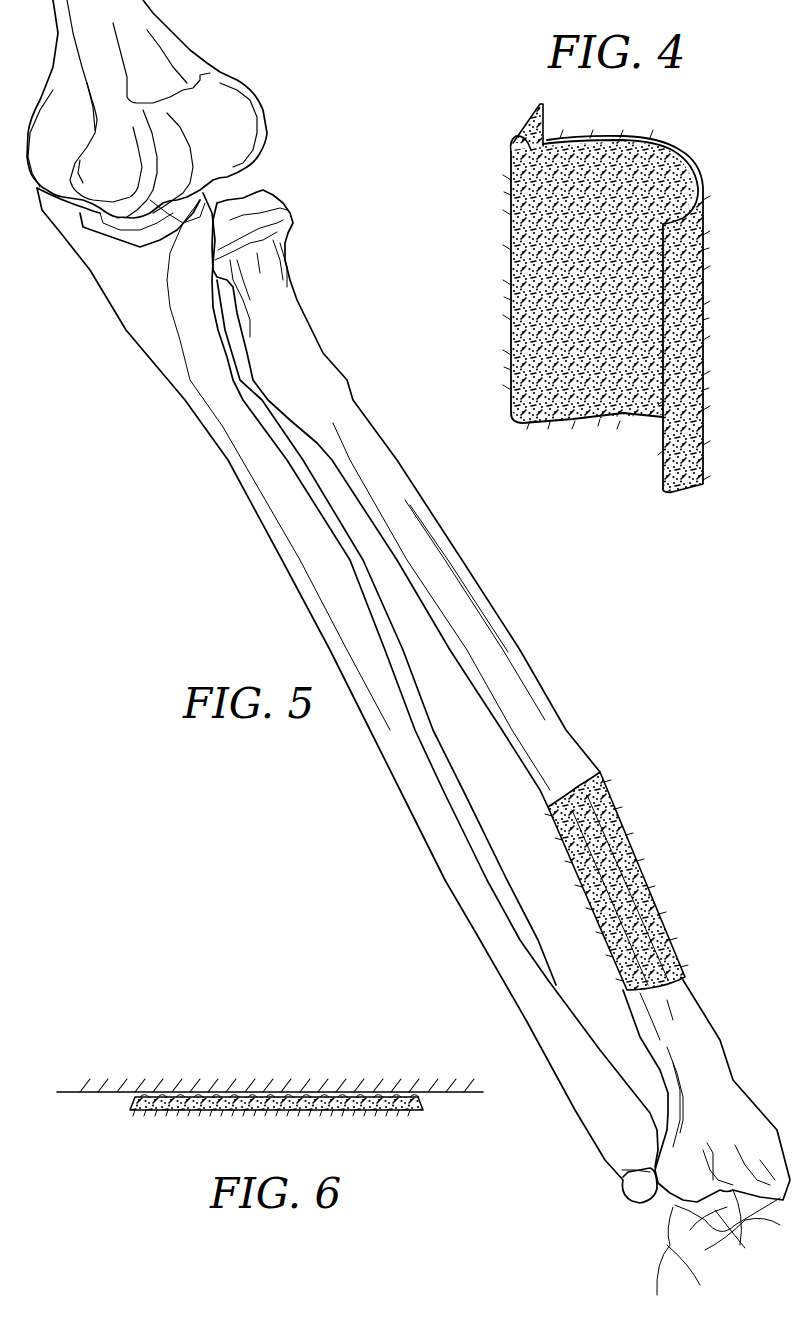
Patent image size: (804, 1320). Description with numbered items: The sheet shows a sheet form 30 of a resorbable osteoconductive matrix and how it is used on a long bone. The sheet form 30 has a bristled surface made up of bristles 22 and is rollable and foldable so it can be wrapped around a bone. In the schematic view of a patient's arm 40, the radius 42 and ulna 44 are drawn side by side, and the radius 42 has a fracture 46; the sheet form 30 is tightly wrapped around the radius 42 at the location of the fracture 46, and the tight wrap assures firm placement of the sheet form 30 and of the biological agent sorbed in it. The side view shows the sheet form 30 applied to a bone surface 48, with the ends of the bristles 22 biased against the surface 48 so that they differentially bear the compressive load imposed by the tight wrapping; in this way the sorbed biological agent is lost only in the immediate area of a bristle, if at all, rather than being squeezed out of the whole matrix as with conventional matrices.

In FIG. 4, the bristles 22 is at (560, 273).
In FIG. 6, the bristles 22 is at (227, 1092).
In FIG. 4, the sheet form 30 is at (693, 139).
In FIG. 6, the sheet form 30 is at (178, 1110).
In FIG. 5, the arm 40 is at (586, 688).
In FIG. 5, the radius 42 is at (713, 1038).
In FIG. 6, the radius 42 is at (90, 1092).
In FIG. 5, the ulna 44 is at (470, 905).
In FIG. 5, the fracture 46 is at (619, 900).
In FIG. 6, the surface 48 is at (470, 1095).